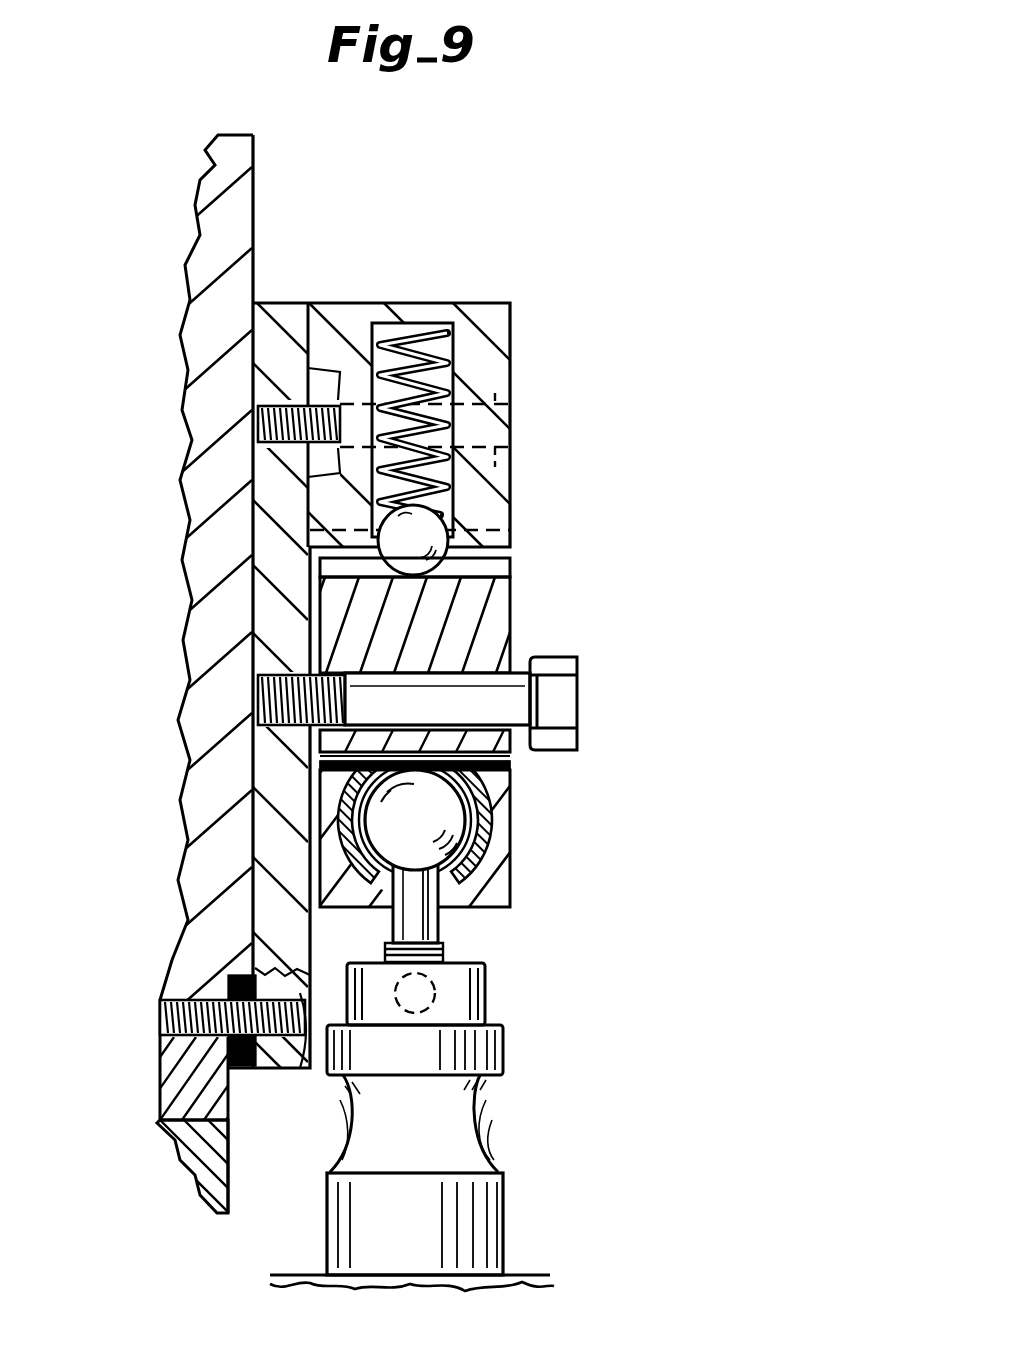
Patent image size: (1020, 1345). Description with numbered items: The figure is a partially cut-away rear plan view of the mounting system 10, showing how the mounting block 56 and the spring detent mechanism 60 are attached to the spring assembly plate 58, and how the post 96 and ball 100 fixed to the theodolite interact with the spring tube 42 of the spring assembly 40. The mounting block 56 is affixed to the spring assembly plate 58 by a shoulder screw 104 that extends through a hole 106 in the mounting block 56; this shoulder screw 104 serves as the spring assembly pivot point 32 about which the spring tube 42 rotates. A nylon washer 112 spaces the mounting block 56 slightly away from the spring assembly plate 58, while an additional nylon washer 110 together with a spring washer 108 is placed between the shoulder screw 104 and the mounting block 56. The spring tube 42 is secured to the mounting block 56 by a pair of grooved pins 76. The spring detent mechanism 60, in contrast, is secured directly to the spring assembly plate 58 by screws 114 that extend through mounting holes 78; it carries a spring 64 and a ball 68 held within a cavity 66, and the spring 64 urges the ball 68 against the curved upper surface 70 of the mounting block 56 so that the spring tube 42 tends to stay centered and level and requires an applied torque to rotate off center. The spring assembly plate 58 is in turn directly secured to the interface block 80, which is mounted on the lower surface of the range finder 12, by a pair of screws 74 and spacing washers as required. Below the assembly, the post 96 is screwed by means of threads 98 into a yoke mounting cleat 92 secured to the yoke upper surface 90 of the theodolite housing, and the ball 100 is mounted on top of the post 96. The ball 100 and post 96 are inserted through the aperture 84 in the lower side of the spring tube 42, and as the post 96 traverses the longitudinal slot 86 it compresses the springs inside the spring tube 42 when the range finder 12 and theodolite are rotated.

The mounting system 10 is at (736, 1068).
The range finder 12 is at (266, 194).
The spring assembly pivot point 32 is at (592, 705).
The spring assembly 40 is at (587, 833).
The spring tube 42 is at (447, 868).
The mounting block 56 is at (510, 560).
The spring assembly plate 58 is at (288, 302).
The spring detent mechanism 60 is at (440, 258).
The spring 64 is at (458, 375).
The cavity 66 is at (455, 365).
The ball 68 is at (420, 525).
The upper surface 70 is at (512, 572).
The screws 74 is at (320, 1020).
The grooved pins 76 is at (318, 762).
The mounting holes 78 is at (340, 370).
The interface block 80 is at (145, 1086).
The aperture 84 is at (460, 862).
The slot 86 is at (443, 885).
The yoke upper surface 90 is at (538, 1275).
The yoke mounting cleat 92 is at (332, 1101).
The post 96 is at (400, 888).
The threads 98 is at (376, 938).
The ball 100 is at (457, 816).
The shoulder screw 104 is at (612, 676).
The hole 106 is at (522, 654).
The spring washer 108 is at (432, 685).
The nylon washer 110 is at (530, 752).
The nylon washer 112 is at (310, 660).
The screws 114 is at (517, 404).